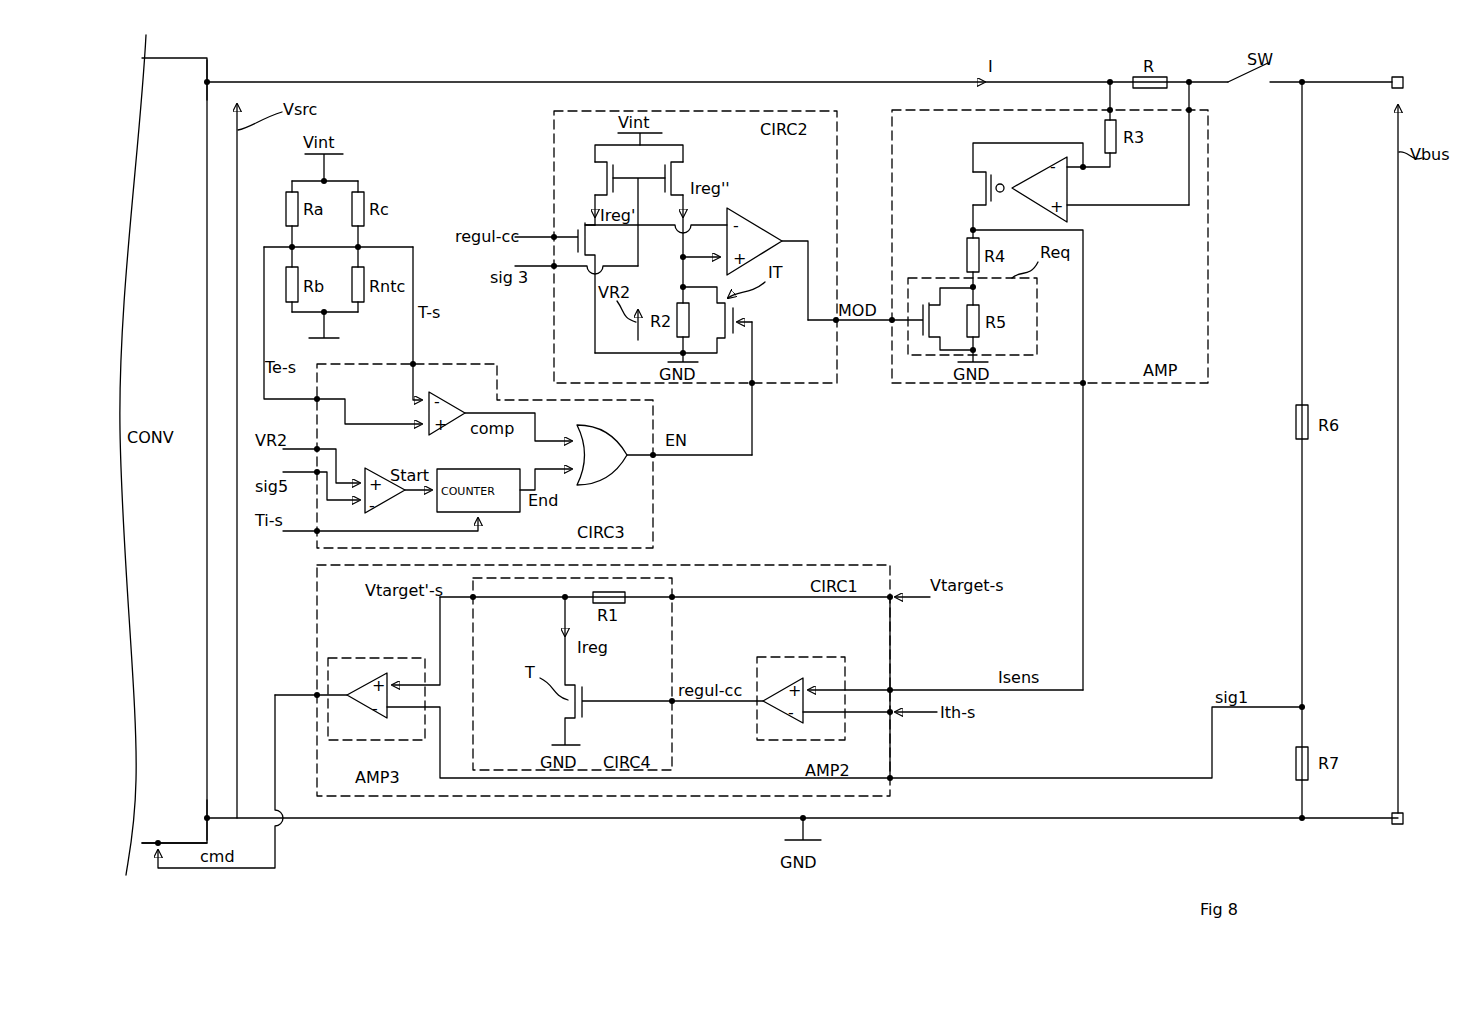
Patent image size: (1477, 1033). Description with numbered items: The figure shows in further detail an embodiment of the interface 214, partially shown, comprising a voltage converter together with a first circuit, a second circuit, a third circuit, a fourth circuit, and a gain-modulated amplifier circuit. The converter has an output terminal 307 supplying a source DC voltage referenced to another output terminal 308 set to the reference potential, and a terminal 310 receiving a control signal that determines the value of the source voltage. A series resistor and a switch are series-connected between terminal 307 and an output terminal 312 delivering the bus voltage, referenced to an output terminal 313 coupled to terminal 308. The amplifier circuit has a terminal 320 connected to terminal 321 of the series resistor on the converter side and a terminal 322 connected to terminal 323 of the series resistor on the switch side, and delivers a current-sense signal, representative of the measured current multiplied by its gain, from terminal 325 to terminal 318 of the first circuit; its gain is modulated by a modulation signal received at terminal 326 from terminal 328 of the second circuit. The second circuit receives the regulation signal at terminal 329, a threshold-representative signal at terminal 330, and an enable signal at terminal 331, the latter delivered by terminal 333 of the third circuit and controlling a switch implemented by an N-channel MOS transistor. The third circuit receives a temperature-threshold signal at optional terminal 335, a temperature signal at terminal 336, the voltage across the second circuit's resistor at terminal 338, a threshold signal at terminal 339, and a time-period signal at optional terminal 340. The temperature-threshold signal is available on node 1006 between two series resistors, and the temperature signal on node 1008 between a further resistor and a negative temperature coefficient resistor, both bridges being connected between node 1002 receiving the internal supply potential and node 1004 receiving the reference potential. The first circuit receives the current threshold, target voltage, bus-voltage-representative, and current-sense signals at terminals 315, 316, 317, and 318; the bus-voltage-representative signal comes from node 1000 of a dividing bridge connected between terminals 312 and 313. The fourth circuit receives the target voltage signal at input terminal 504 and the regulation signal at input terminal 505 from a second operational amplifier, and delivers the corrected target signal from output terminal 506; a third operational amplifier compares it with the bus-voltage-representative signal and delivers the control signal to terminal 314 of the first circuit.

The interface 214 is at (845, 58).
The output terminal 307 is at (206, 83).
The output terminal 308 is at (206, 816).
The terminal 310 is at (157, 841).
The output terminal 312 is at (1393, 77).
The output terminal 313 is at (1395, 826).
The terminal 314 is at (318, 698).
The terminal 315 is at (892, 715).
The terminal 316 is at (892, 600).
The terminal 317 is at (892, 781).
The terminal 318 is at (892, 688).
The terminal 320 is at (1108, 110).
The terminal 321 is at (1108, 81).
The terminal 322 is at (1191, 112).
The terminal 323 is at (1190, 80).
The terminal 325 is at (1085, 386).
The terminal 326 is at (893, 323).
The terminal 328 is at (836, 316).
The terminal 329 is at (553, 235).
The terminal 330 is at (553, 268).
The terminal 331 is at (754, 386).
The terminal 333 is at (655, 458).
The terminal 335 is at (319, 397).
The terminal 336 is at (415, 362).
The terminal 338 is at (319, 447).
The terminal 339 is at (319, 470).
The terminal 340 is at (316, 533).
The input terminal 504 is at (674, 595).
The input terminal 505 is at (673, 703).
The output terminal 506 is at (475, 600).
The connection node 1000 is at (1304, 705).
The node 1002 is at (326, 182).
The node 1004 is at (326, 314).
The node 1006 is at (290, 246).
The node 1008 is at (356, 247).